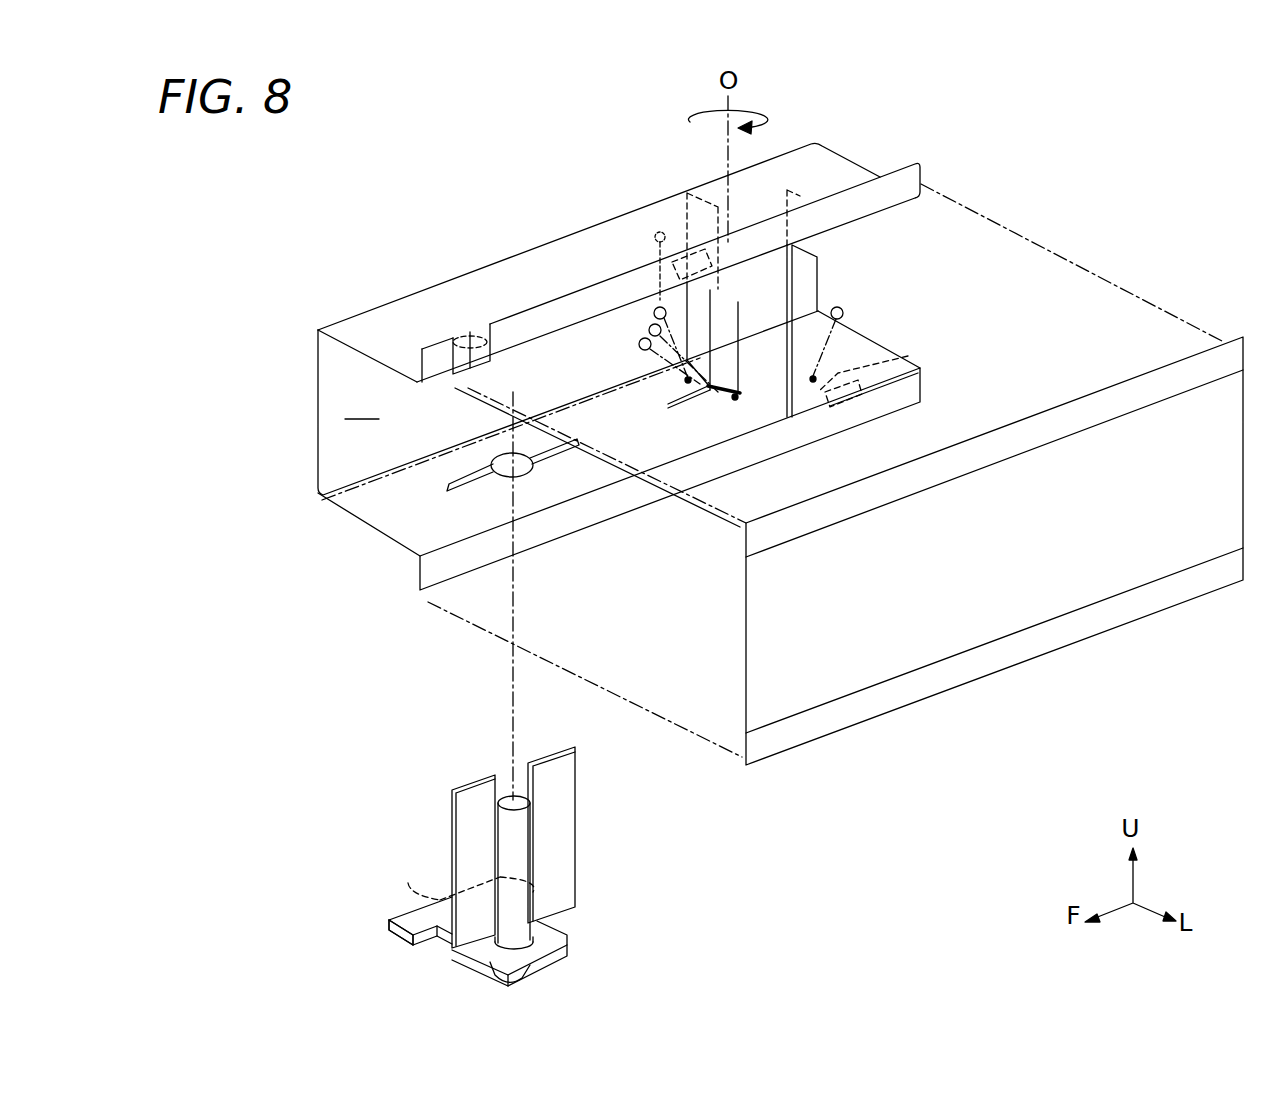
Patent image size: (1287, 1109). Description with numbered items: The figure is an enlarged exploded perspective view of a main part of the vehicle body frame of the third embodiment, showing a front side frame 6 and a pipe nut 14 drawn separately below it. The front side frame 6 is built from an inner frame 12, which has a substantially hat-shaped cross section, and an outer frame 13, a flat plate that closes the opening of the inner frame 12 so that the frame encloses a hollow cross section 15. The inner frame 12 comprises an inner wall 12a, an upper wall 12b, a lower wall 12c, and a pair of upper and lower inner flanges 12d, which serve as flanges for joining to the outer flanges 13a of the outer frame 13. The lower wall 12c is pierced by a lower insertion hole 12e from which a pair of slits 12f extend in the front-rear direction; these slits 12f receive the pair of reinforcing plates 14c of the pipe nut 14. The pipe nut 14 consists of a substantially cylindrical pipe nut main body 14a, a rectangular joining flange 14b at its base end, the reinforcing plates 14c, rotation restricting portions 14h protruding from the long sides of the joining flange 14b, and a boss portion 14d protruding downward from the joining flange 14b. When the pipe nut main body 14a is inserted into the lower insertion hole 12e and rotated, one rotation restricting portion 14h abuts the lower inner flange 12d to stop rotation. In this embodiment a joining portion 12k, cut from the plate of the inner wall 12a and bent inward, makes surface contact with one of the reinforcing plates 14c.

The front side frame 6 is at (484, 130).
The inner frame 12 is at (489, 262).
The inner wall 12a is at (316, 395).
The upper wall 12b is at (396, 330).
The lower wall 12c is at (417, 540).
The inner flange 12d is at (622, 285).
The lower insertion hole 12e is at (447, 485).
The slit 12f is at (446, 481).
The joining portion 12k is at (480, 380).
The outer frame 13 is at (1112, 627).
The outer flange 13a is at (1073, 420).
The pipe nut 14 is at (388, 750).
The pipe nut main body 14a is at (500, 857).
The joining flange 14b is at (490, 956).
The reinforcing plate 14c is at (470, 786).
The boss portion 14d is at (540, 962).
The rotation restricting portion 14h is at (401, 921).
The hollow cross section 15 is at (362, 405).